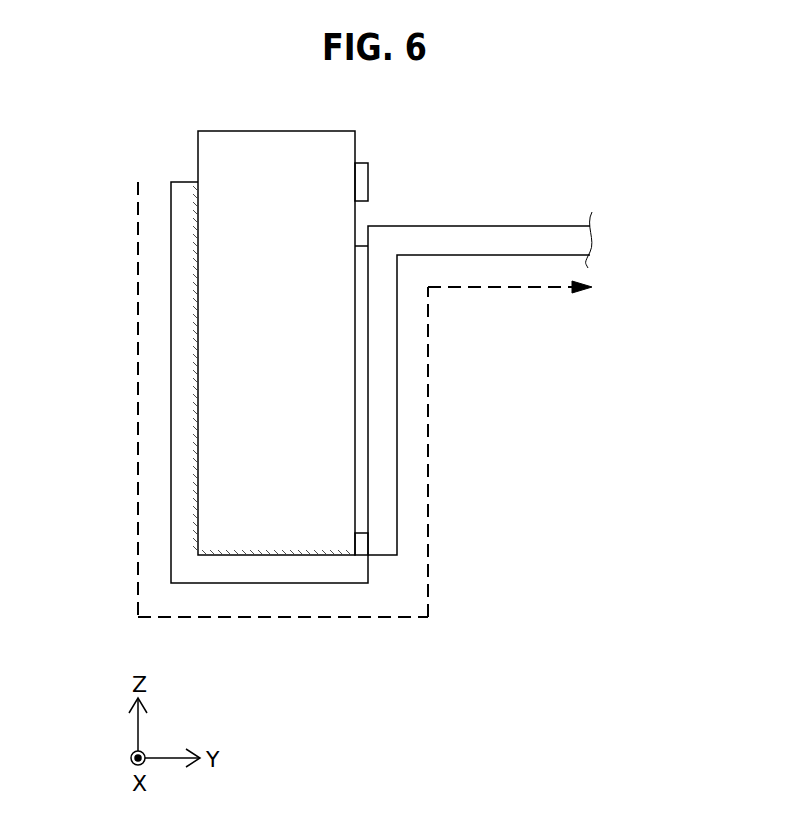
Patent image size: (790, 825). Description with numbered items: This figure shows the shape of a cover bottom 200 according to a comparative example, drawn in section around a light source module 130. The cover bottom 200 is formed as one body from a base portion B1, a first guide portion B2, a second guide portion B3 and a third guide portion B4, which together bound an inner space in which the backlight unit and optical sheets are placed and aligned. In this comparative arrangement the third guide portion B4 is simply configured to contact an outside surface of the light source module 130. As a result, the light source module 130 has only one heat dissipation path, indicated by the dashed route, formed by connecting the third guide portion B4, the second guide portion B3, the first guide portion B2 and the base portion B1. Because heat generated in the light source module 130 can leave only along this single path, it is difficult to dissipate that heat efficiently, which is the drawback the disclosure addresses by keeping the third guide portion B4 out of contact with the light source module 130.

The light source module 130 is at (215, 162).
The cover bottom 200 is at (578, 240).
The base portion B1 is at (535, 243).
The first guide portion B2 is at (385, 452).
The second guide portion B3 is at (315, 572).
The third guide portion B4 is at (180, 383).